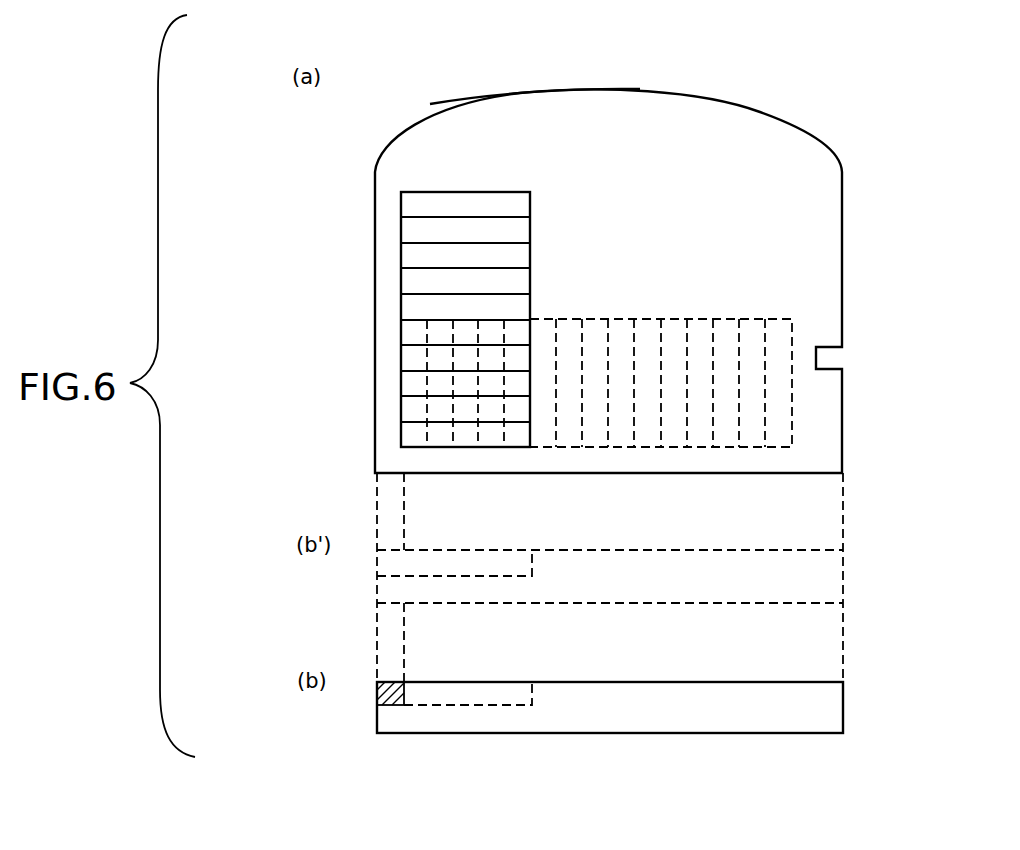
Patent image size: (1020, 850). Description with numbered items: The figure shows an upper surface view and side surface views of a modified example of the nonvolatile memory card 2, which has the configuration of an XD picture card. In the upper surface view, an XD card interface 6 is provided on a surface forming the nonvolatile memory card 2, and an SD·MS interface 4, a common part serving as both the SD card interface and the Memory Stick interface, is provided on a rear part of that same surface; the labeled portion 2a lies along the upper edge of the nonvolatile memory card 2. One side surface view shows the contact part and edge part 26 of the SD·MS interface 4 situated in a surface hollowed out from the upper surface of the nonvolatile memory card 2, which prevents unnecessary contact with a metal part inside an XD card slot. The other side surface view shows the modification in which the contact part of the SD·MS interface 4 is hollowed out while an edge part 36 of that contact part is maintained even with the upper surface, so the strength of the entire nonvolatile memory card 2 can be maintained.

The nonvolatile memory card 2 is at (722, 98).
The curved top portion of housing 2a is at (500, 112).
The SD·MS interface 4 is at (401, 207).
The XD card interface 6 is at (792, 425).
The contact part and edge part 26 is at (386, 564).
The edge part 36 is at (385, 696).